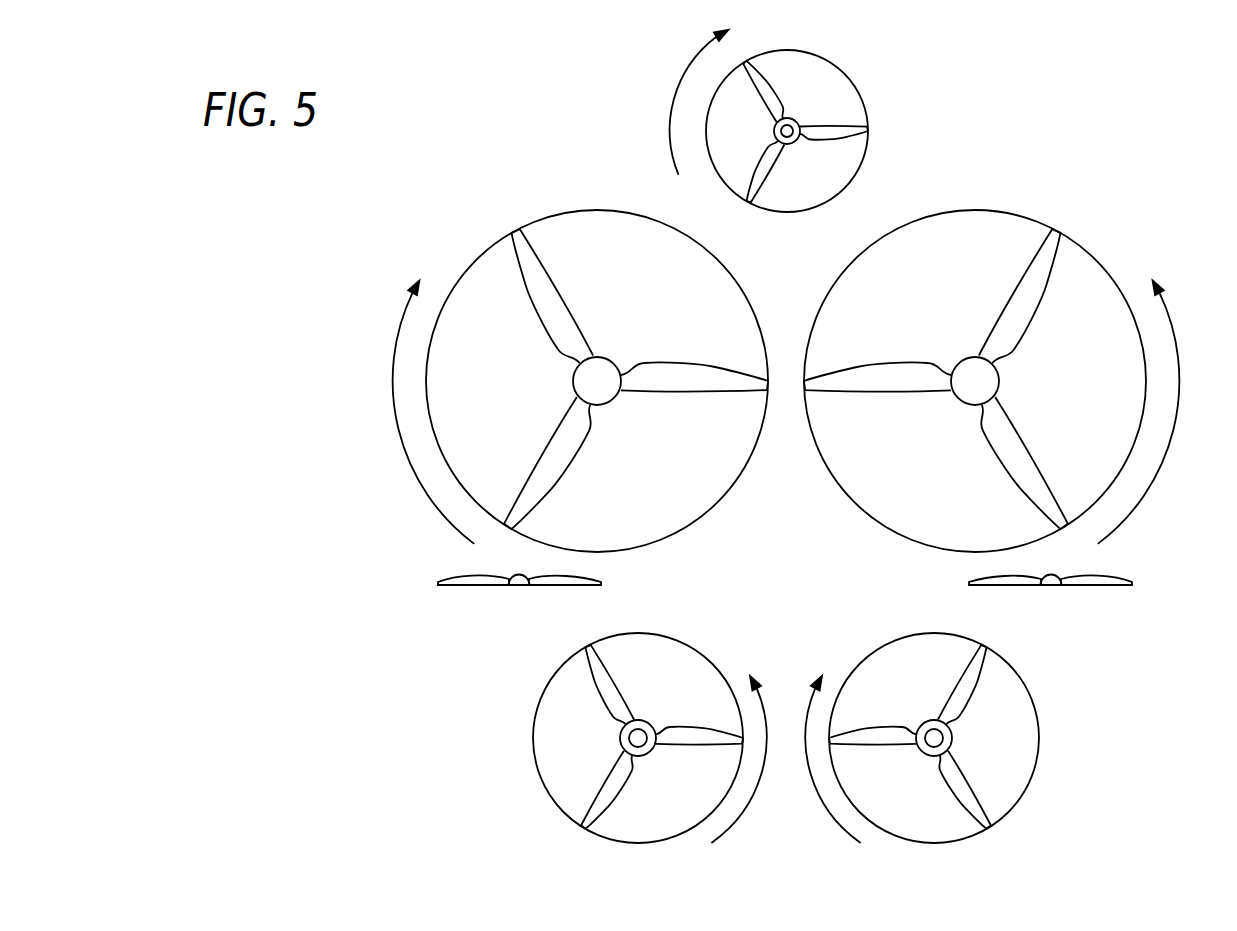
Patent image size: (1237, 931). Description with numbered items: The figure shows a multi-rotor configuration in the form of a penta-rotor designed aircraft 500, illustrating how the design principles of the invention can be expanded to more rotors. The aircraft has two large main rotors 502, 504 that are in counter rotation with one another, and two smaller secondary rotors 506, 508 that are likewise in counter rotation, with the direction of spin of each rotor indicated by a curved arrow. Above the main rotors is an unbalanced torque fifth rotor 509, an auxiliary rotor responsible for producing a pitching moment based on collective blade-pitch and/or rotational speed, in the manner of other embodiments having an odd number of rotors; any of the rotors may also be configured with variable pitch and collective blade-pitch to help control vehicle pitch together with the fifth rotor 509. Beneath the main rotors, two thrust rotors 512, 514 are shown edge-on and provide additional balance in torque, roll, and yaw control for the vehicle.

The penta-rotor designed aircraft 500 is at (1095, 137).
The main rotor 502 is at (502, 315).
The main rotor 504 is at (1067, 317).
The secondary rotor 506 is at (578, 740).
The secondary rotor 508 is at (995, 742).
The unbalanced torque fifth rotor 509 is at (789, 120).
The thrust rotor 512 is at (468, 572).
The thrust rotor 514 is at (1097, 573).